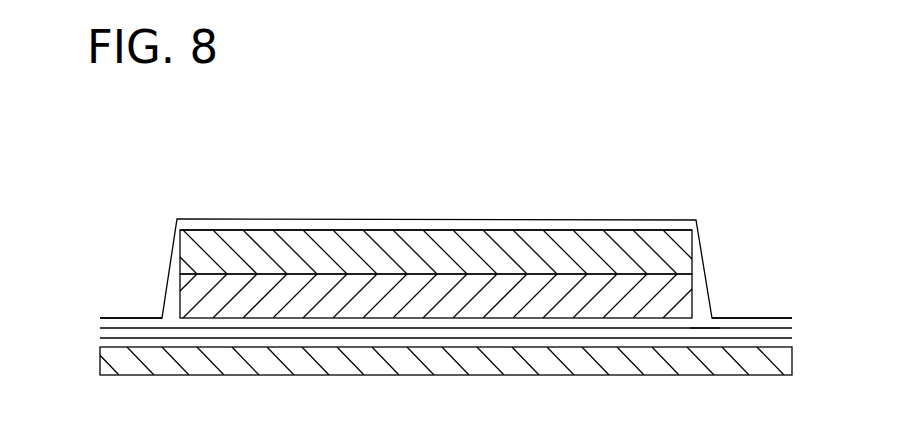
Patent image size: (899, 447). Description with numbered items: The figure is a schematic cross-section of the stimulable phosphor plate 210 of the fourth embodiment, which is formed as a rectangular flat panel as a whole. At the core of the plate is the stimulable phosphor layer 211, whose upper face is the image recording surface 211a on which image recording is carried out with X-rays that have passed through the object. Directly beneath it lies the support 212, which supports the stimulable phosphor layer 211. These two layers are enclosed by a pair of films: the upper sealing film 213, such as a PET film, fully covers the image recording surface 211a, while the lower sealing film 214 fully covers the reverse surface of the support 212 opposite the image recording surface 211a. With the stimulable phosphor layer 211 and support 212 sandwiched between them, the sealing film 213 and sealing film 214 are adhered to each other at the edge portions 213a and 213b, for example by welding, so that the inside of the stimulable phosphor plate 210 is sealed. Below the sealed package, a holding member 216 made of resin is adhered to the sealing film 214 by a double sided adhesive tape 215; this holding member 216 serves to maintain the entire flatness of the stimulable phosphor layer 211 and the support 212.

The stimulable phosphor plate 210 is at (438, 277).
The stimulable phosphor layer 211 is at (397, 238).
The image recording surface 211a is at (280, 228).
The support 212 is at (182, 292).
The sealing film 213 is at (612, 220).
The edge portion 213a is at (108, 317).
The edge portion 213b is at (763, 317).
The sealing film 214 is at (700, 327).
The double sided adhesive tape 215 is at (780, 332).
The holding member 216 is at (513, 363).